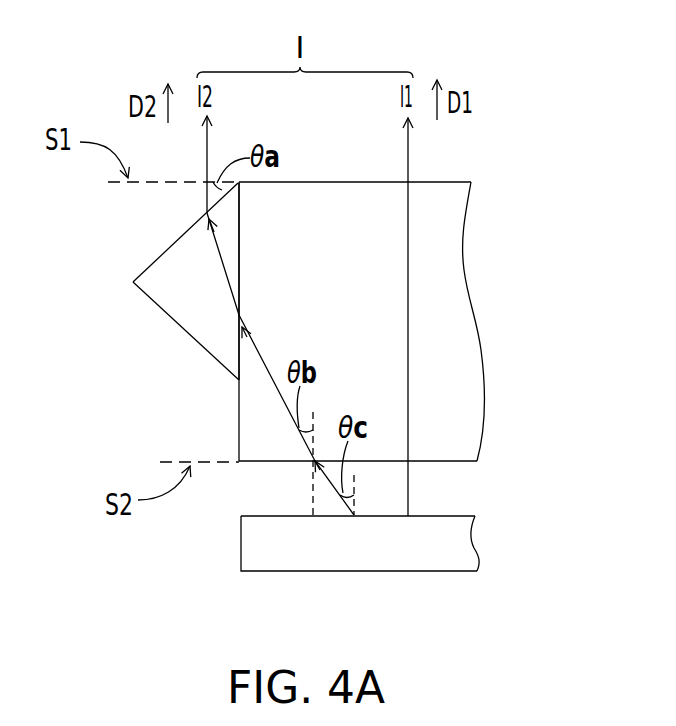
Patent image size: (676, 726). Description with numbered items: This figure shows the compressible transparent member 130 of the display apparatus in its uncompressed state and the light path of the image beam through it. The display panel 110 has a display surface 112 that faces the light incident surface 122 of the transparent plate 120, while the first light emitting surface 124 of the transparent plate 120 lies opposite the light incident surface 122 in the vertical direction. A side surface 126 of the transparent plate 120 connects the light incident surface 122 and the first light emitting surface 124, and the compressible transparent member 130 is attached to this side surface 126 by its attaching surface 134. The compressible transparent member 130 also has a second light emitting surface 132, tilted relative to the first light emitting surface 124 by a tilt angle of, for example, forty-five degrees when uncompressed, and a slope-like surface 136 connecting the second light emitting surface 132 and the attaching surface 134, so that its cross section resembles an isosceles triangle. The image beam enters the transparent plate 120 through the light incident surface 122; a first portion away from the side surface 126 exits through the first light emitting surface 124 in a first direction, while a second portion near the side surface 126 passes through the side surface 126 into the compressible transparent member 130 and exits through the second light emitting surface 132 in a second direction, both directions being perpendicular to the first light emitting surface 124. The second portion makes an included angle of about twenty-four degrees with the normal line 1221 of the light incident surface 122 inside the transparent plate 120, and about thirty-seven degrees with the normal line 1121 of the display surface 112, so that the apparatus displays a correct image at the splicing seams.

The display panel 110 is at (407, 536).
The display surface 112 is at (455, 514).
The transparent plate 120 is at (413, 306).
The light incident surface 122 is at (466, 463).
The first light emitting surface 124 is at (448, 180).
The side surface 126 is at (243, 249).
The compressible transparent member 130 is at (152, 289).
The second light emitting surface 132 is at (167, 243).
The attaching surface 134 is at (236, 348).
The surface 136 is at (162, 315).
The normal line of the display surface 1121 is at (355, 502).
The normal line of the light incident surface 1221 is at (313, 500).